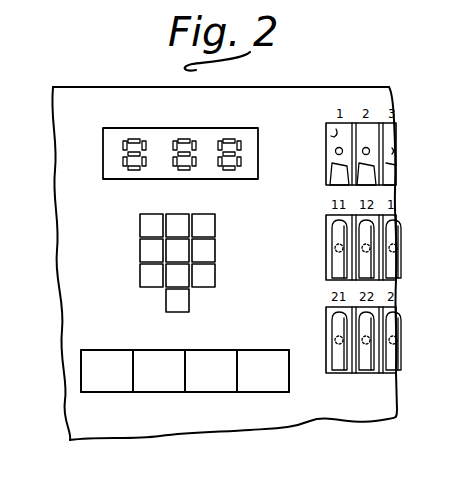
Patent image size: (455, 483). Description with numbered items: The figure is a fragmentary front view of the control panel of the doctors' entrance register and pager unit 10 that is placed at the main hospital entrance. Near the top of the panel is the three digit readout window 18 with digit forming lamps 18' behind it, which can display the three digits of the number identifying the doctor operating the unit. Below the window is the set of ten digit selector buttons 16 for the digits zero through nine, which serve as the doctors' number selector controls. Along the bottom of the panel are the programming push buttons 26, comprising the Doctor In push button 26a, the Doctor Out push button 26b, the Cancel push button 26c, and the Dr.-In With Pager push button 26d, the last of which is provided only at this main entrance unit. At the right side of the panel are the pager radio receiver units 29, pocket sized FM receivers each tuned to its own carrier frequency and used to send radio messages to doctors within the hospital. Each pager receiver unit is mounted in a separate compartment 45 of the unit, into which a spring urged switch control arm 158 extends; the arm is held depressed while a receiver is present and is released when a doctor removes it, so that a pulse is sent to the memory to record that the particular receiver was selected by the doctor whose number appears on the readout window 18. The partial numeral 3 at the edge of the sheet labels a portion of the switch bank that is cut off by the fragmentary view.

The doctors' entrance register and pager unit 10 is at (70, 82).
The three digit readout window 18 is at (165, 165).
The digit forming lamps 18' is at (206, 172).
The digit selector buttons 16 is at (130, 254).
The programming push buttons 26 is at (185, 392).
The Doctor In push button 26a is at (108, 393).
The Doctor Out push button 26b is at (163, 349).
The Cancel push button 26c is at (249, 427).
The Dr.-In With Pager push button 26d is at (278, 333).
The compartment 45 is at (336, 129).
The switch control arm 158 is at (343, 149).
The pager radio receiver units 29 is at (337, 170).
The switch bank 3 is at (424, 152).